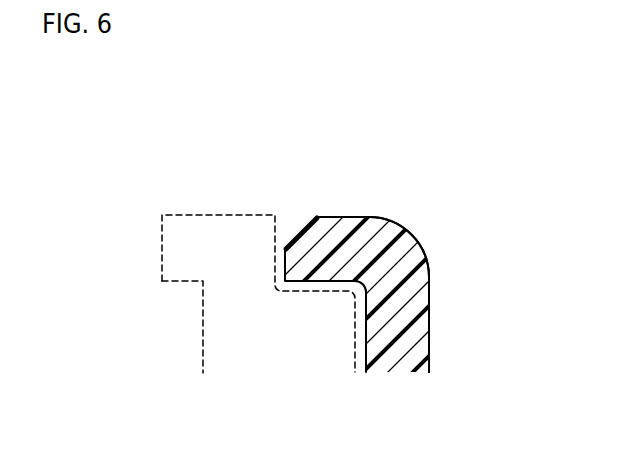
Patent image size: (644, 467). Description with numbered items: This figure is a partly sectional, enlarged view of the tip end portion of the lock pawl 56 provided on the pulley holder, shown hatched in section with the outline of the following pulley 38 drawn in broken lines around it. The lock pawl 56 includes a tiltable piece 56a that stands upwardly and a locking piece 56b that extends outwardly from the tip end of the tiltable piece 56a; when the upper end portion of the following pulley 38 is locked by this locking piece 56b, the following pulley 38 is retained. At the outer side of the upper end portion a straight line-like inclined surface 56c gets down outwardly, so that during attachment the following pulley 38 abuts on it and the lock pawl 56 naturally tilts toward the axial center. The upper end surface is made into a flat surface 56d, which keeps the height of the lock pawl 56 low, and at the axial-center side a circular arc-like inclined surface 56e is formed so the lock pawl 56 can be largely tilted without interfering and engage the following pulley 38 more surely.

The lock pawl 56 is at (113, 126).
The tiltable piece 56a is at (415, 312).
The locking piece 56b is at (326, 242).
The inclined surface 56c is at (305, 232).
The flat surface 56d is at (340, 220).
The inclined surface 56e is at (415, 237).
The following pulley 38 is at (217, 328).